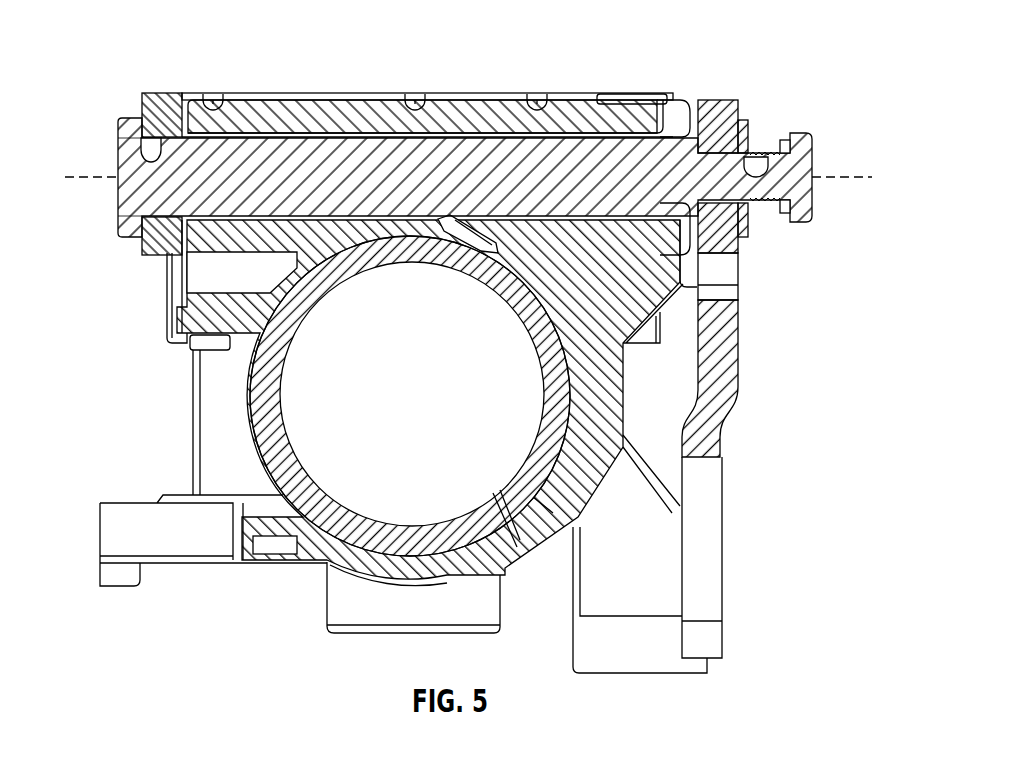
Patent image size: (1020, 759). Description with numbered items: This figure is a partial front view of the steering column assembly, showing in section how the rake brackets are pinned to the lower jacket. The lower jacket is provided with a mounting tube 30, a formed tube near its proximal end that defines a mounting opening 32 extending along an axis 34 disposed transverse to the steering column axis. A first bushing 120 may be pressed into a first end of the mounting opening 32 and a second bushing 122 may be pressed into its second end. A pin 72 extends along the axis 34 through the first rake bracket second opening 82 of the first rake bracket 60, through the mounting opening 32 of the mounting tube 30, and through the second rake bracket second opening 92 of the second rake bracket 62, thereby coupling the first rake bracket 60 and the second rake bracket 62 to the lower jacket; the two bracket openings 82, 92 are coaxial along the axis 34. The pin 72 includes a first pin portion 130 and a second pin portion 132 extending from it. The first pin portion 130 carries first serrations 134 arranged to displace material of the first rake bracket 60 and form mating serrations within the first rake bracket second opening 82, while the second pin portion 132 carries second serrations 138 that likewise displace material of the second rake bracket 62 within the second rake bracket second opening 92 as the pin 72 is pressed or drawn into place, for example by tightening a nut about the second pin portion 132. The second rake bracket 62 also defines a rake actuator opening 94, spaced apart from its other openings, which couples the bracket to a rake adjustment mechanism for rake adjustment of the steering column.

The mounting tube 30 is at (353, 110).
The mounting opening 32 is at (487, 133).
The axis 34 is at (840, 177).
The first rake bracket 60 is at (142, 272).
The second rake bracket 62 is at (744, 410).
The pin 72 is at (117, 137).
The first rake bracket second opening 82 is at (160, 213).
The second rake bracket second opening 92 is at (722, 207).
The rake actuator opening 94 is at (703, 556).
The first bushing 120 is at (205, 104).
The second bushing 122 is at (700, 100).
The first pin portion 130 is at (253, 160).
The second pin portion 132 is at (793, 138).
The first serrations 134 is at (146, 140).
The second serrations 138 is at (749, 158).